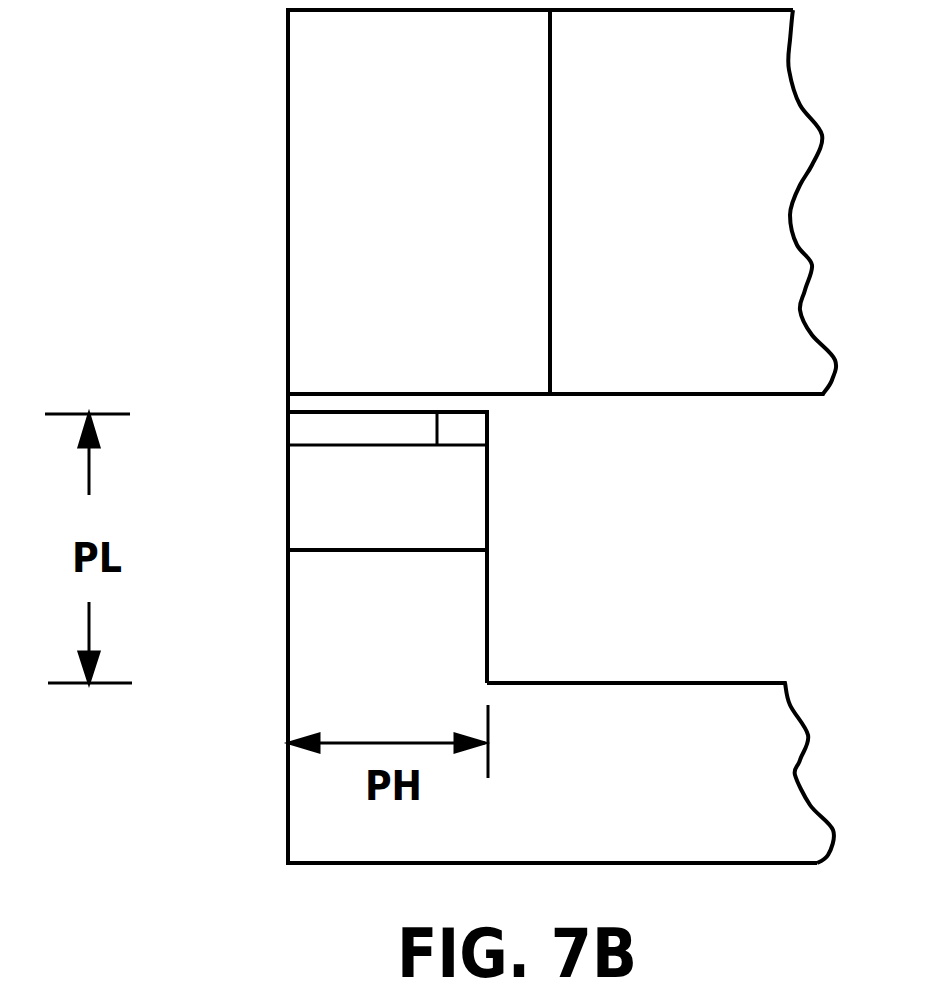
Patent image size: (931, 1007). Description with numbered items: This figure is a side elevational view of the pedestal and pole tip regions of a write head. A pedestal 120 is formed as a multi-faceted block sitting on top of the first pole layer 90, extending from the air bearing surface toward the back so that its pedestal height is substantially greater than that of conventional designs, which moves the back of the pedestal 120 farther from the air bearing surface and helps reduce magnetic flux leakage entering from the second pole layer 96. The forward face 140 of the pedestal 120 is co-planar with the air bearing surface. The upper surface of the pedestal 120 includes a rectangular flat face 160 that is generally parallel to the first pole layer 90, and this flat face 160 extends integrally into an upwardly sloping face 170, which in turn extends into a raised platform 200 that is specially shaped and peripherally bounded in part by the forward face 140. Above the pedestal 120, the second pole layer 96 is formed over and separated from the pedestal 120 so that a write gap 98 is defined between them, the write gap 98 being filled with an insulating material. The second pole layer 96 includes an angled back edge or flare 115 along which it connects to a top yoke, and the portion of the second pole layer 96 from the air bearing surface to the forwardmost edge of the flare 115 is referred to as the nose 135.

The second pole layer 96 is at (250, 143).
The first pole layer 90 is at (561, 773).
The write gap 98 is at (252, 405).
The nose 135 is at (454, 202).
The flare 115 is at (681, 194).
The raised platform 200 is at (518, 435).
The sloping face 170 is at (398, 513).
The flat face 160 is at (398, 633).
The forward face 140 is at (250, 536).
The pedestal 120 is at (530, 588).